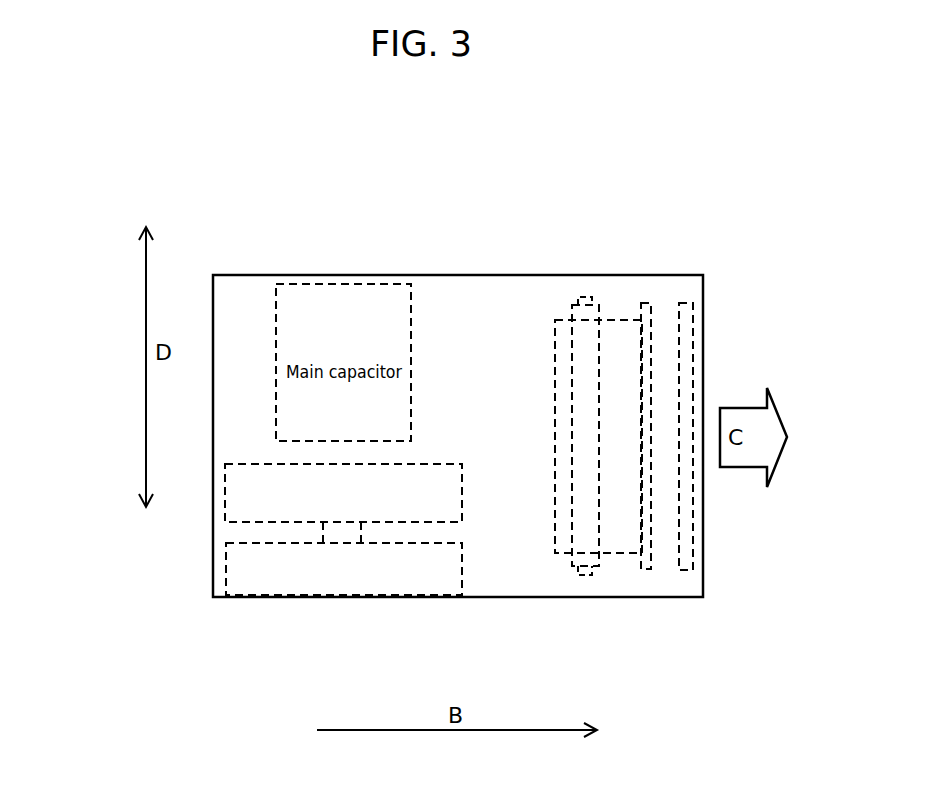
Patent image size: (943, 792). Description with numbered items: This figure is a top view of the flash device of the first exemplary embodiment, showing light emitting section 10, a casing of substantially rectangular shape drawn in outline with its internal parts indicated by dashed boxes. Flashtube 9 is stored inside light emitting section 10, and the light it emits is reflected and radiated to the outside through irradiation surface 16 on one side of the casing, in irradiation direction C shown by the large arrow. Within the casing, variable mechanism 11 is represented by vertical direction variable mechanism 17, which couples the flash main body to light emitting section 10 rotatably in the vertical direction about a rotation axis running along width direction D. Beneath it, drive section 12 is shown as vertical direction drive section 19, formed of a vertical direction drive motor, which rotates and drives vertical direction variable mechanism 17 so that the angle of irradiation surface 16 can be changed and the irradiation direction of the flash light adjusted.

The light emitting section 10 is at (297, 274).
The vertical direction variable mechanism 17 is at (266, 534).
The variable mechanism 11 is at (225, 530).
The vertical direction drive section 19 is at (266, 609).
The drive section 12 is at (226, 584).
The flashtube 9 is at (572, 563).
The irradiation surface 16 is at (703, 570).